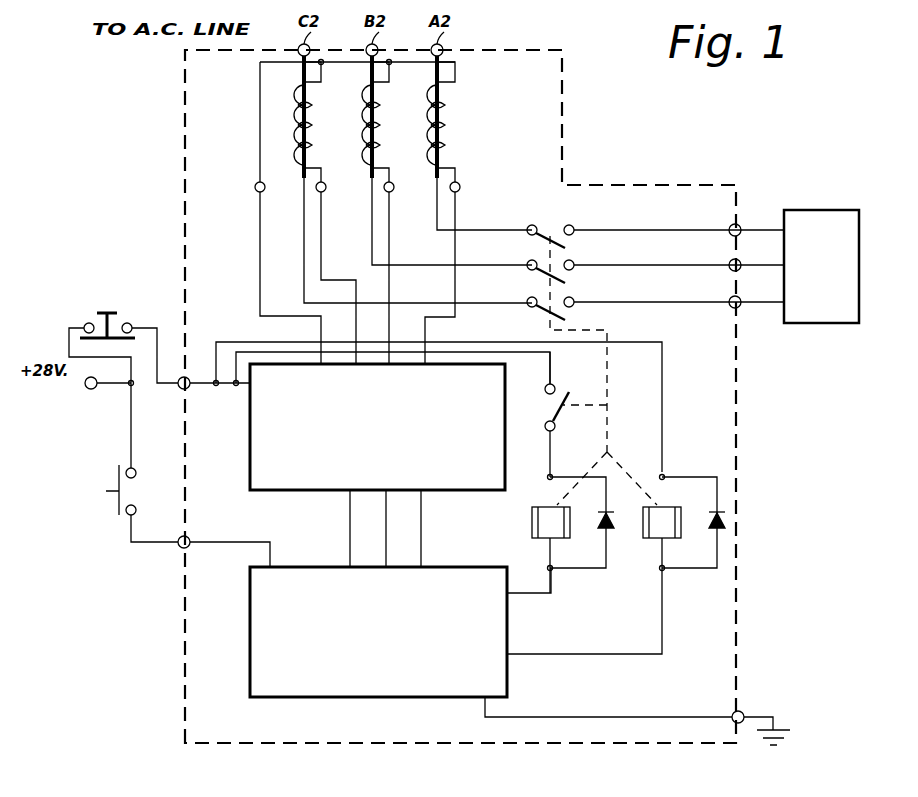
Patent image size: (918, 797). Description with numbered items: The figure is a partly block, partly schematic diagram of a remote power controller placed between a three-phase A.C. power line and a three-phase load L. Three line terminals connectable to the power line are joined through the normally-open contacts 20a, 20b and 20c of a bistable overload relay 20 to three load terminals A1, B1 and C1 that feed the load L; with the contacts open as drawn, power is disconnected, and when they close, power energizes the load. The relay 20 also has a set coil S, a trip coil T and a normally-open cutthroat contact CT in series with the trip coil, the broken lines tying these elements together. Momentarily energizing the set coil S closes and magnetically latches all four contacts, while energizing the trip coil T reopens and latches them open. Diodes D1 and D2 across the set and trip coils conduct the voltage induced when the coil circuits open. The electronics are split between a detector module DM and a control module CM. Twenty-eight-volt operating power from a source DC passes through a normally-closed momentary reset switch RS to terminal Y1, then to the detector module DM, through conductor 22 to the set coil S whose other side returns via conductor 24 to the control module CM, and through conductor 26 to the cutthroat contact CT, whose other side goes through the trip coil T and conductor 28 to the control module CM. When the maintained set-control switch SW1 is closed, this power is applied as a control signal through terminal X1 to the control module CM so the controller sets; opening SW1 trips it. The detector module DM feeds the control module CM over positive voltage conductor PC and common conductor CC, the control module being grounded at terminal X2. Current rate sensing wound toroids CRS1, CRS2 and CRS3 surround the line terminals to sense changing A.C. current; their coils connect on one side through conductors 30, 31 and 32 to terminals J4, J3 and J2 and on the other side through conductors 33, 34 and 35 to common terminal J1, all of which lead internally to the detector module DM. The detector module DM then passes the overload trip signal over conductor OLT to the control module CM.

The overload relay 20 is at (604, 381).
The normally-open contact 20a is at (571, 238).
The normally-open contact 20b is at (571, 273).
The normally-open contact 20c is at (571, 310).
The conductor 22 is at (218, 339).
The conductor 24 is at (662, 612).
The conductor 26 is at (546, 373).
The conductor 28 is at (520, 597).
The conductor 30 is at (456, 168).
The conductor 31 is at (389, 166).
The conductor 32 is at (328, 158).
The conductor 33 is at (456, 75).
The conductor 34 is at (389, 80).
The conductor 35 is at (321, 80).
The current rate sensing wound toroid CRS1 is at (449, 121).
The current rate sensing wound toroid CRS2 is at (397, 115).
The current rate sensing wound toroid CRS3 is at (291, 106).
The common terminal J1 is at (254, 191).
The terminal J2 is at (326, 190).
The terminal J3 is at (394, 190).
The terminal J4 is at (460, 190).
The reset switch RS is at (94, 318).
The source DC is at (90, 390).
The terminal Y1 is at (180, 390).
The set-control switch SW1 is at (137, 482).
The terminal X1 is at (180, 536).
The terminal X2 is at (742, 711).
The detector module DM is at (250, 431).
The control module CM is at (250, 630).
The conductor OLT is at (386, 490).
The positive voltage conductor PC is at (350, 525).
The common conductor CC is at (421, 525).
The cutthroat contact CT is at (565, 392).
The trip coil T is at (551, 522).
The set coil S is at (662, 522).
The diode D1 is at (708, 520).
The diode D2 is at (615, 518).
The load terminal A1 is at (740, 224).
The load terminal B1 is at (740, 259).
The load terminal C1 is at (740, 296).
The load L is at (816, 214).